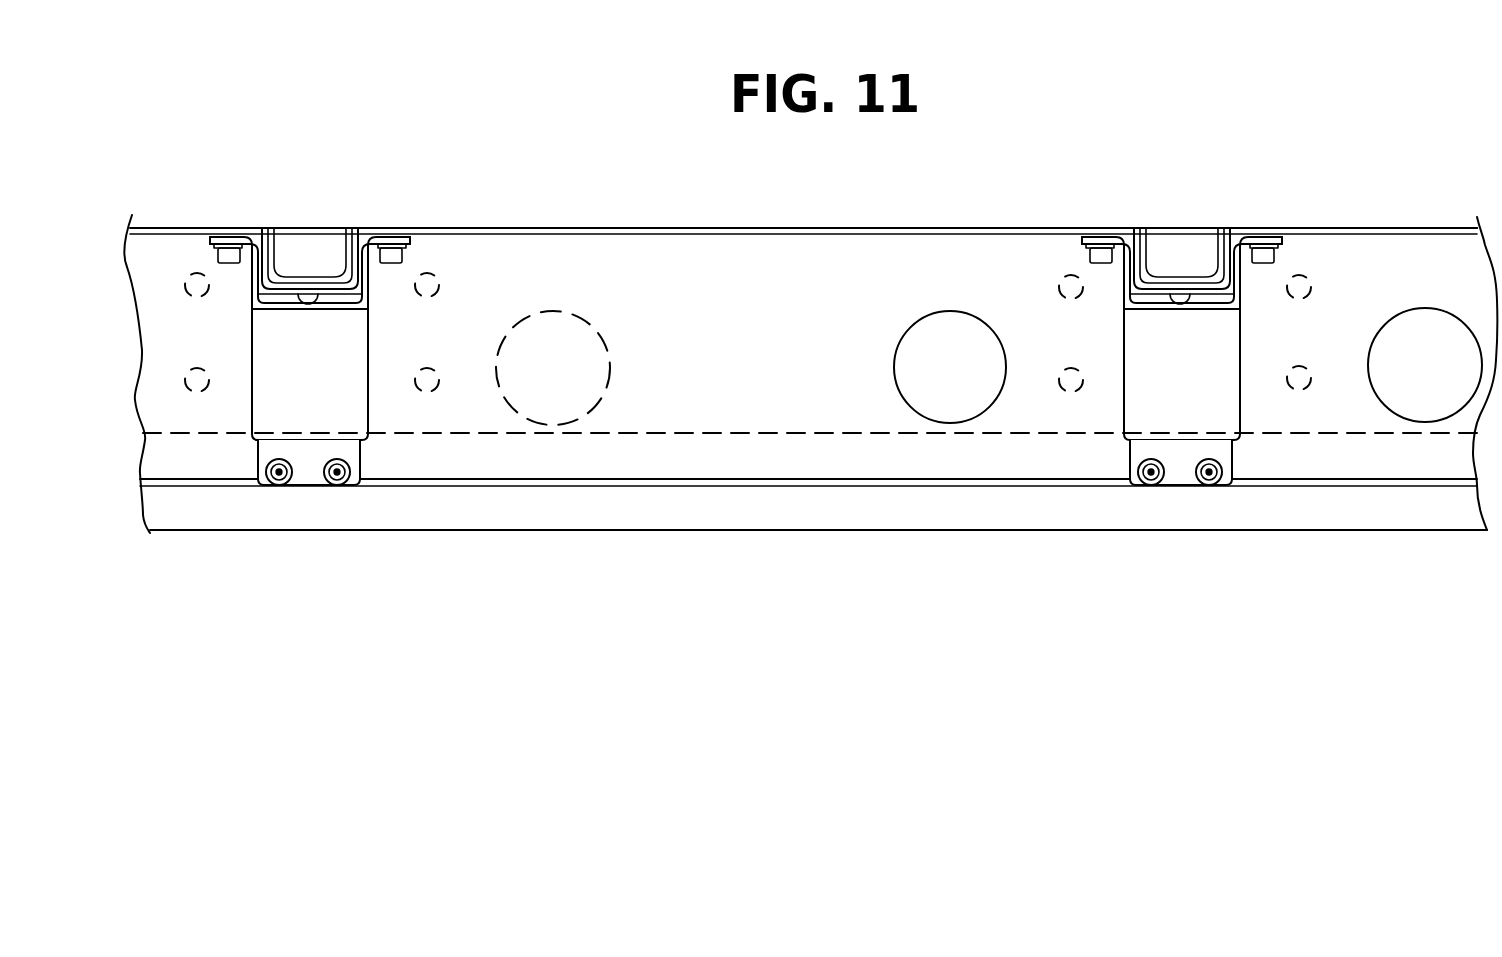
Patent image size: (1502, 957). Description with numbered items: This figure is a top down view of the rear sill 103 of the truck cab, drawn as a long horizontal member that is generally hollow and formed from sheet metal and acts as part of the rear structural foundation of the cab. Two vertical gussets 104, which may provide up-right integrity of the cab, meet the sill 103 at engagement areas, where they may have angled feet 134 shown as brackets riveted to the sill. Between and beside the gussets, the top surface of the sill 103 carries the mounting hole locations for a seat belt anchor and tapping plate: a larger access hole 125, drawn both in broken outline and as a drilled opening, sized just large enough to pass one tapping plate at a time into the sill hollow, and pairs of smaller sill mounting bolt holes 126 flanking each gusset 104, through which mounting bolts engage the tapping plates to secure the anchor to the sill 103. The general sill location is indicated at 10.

The rear sill 10 is at (772, 458).
The rear sill 103 is at (1376, 228).
The vertical gusset 104 is at (333, 285).
The access hole 125 is at (553, 308).
The sill mounting bolt holes 126 is at (196, 268).
The angled feet 134 is at (310, 392).